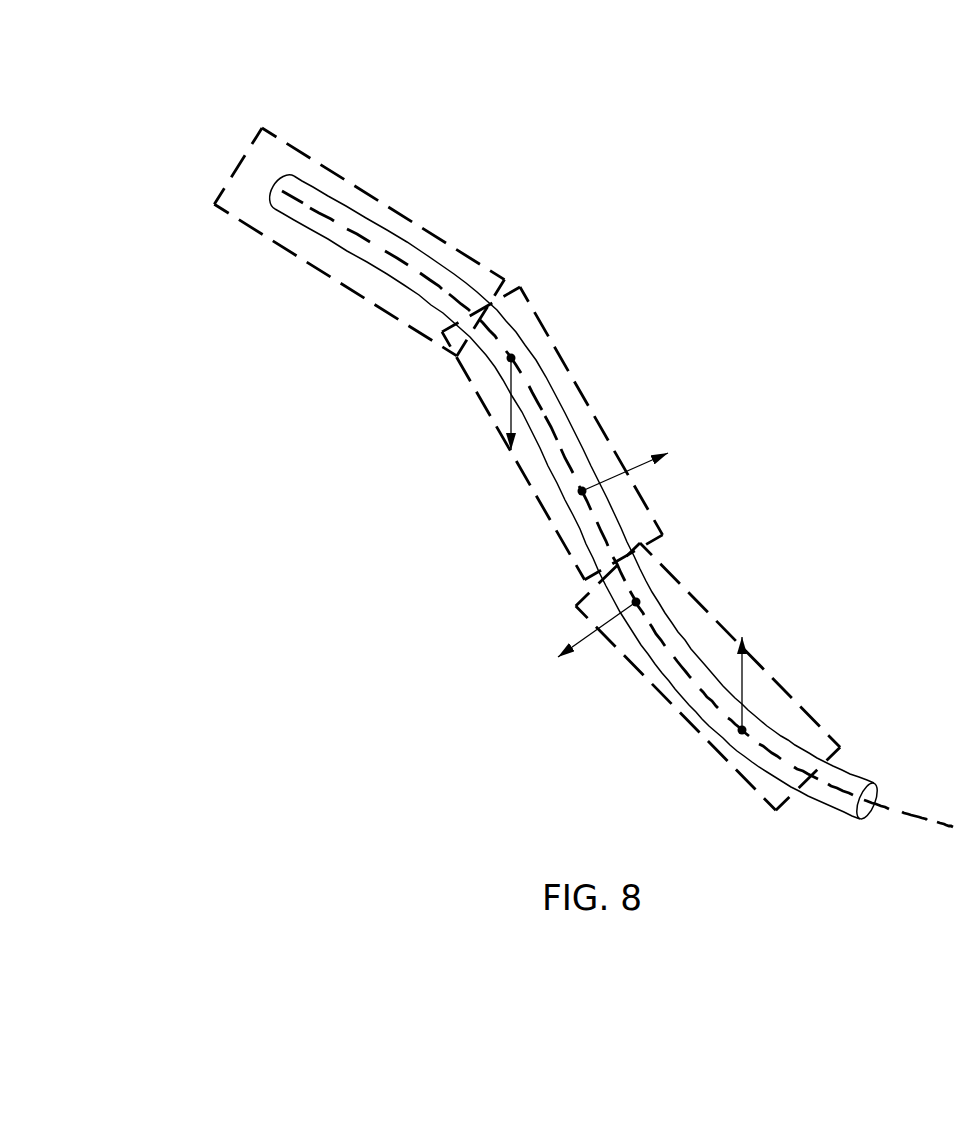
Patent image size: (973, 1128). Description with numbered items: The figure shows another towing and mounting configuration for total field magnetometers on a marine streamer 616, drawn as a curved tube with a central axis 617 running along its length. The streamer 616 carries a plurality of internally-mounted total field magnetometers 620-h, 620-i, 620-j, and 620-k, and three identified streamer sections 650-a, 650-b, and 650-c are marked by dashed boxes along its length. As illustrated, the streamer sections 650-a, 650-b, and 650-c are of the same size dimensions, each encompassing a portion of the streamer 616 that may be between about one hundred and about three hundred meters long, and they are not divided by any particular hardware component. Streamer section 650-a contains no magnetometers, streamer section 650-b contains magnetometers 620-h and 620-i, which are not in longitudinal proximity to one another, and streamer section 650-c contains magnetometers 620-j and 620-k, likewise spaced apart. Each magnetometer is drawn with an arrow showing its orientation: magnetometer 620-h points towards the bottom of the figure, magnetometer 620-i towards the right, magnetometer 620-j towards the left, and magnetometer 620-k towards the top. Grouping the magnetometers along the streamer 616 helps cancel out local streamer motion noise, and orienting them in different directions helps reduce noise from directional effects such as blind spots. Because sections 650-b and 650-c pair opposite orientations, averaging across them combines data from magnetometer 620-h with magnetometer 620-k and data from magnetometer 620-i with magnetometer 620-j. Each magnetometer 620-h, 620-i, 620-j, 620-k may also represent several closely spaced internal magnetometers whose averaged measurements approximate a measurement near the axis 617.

The streamer 616 is at (397, 162).
The axis 617 is at (258, 185).
The streamer section 650-a is at (312, 270).
The streamer section 650-b is at (522, 478).
The streamer section 650-c is at (663, 700).
The total field magnetometer 620-h is at (523, 344).
The total field magnetometer 620-i is at (587, 483).
The total field magnetometer 620-j is at (650, 588).
The total field magnetometer 620-k is at (751, 722).